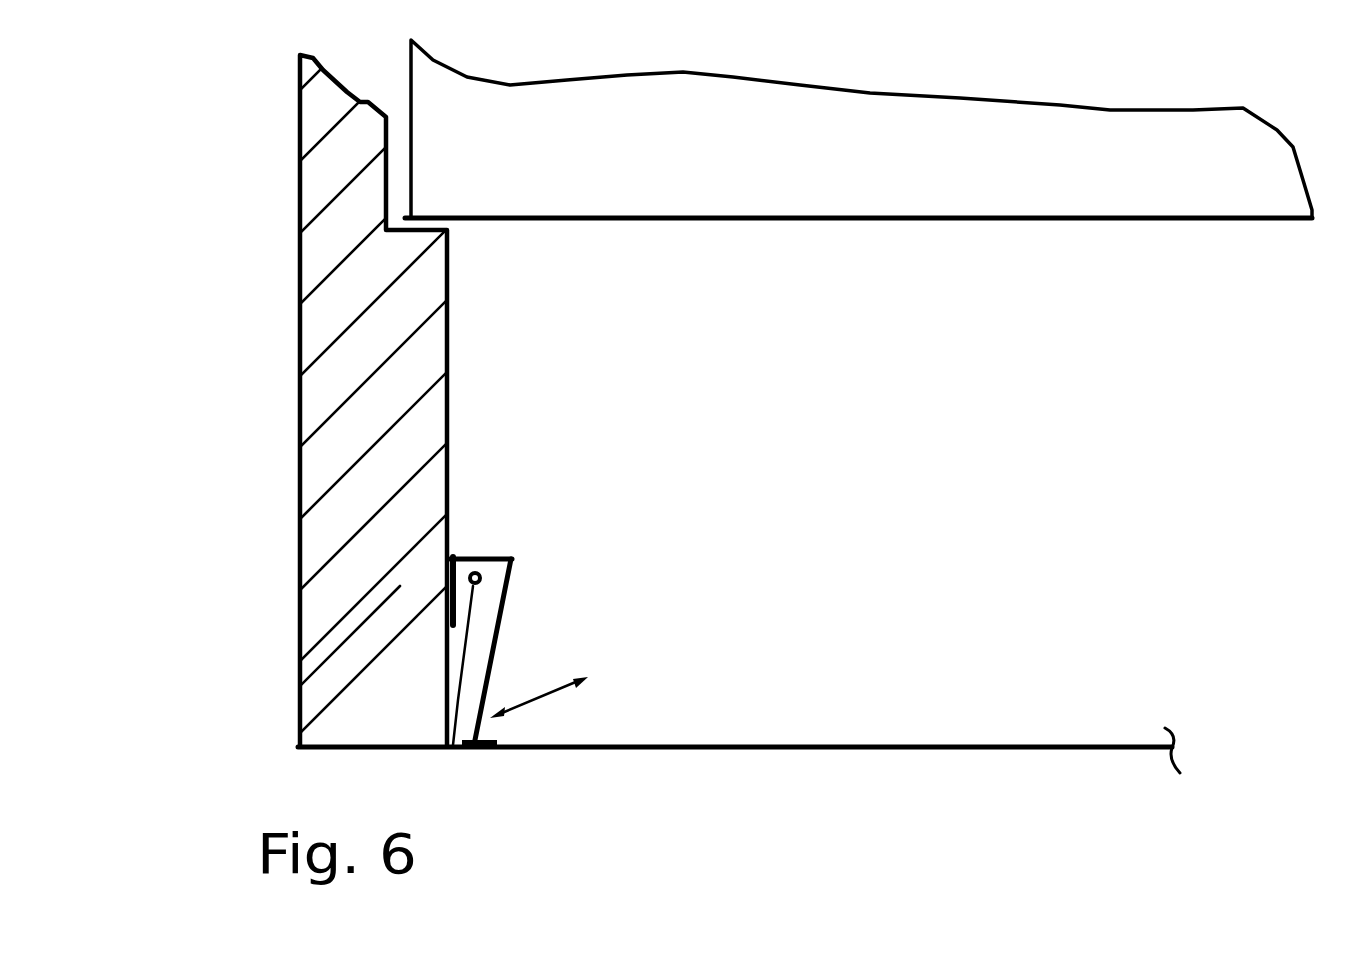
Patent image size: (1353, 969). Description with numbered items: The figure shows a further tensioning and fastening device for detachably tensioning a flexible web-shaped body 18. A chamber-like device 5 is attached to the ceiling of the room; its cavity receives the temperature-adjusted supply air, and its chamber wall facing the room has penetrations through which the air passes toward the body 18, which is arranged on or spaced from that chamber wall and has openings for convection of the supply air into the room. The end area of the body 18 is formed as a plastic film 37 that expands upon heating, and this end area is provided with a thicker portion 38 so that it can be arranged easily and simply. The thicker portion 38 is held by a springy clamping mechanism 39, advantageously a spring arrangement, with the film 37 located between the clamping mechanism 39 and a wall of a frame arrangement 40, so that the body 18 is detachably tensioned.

The chamber-like device 5 is at (746, 170).
The body 18 is at (739, 695).
The plastic film 37 is at (900, 747).
The thicker portion 38 is at (478, 572).
The clamping mechanism 39 is at (498, 637).
The frame arrangement 40 is at (312, 562).